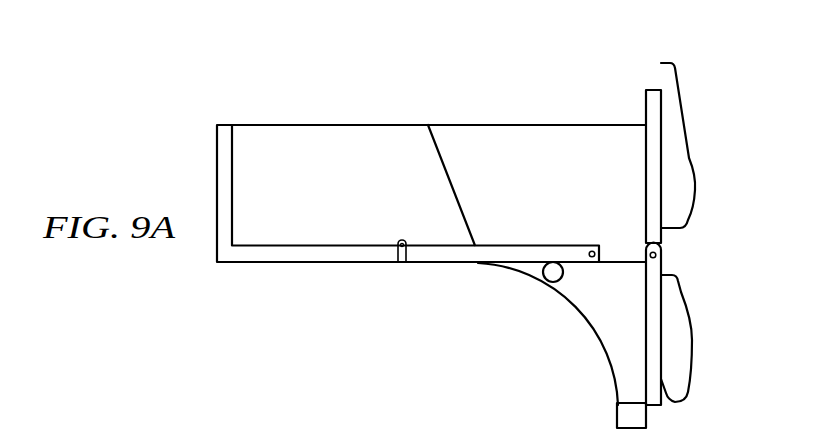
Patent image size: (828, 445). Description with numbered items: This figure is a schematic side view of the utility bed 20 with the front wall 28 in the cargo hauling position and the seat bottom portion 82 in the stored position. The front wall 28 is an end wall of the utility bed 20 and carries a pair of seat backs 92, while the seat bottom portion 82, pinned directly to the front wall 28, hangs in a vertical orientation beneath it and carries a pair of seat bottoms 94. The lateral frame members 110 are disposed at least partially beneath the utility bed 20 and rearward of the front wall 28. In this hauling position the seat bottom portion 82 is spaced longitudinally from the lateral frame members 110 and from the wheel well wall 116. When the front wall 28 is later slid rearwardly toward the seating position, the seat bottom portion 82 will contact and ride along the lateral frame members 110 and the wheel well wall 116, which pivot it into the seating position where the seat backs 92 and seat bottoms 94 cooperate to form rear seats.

The utility bed 20 is at (301, 102).
The front wall 28 is at (644, 175).
The seat bottom portion 82 is at (641, 310).
The seat backs 92 is at (693, 162).
The seat bottoms 94 is at (694, 360).
The lateral frame members 110 is at (543, 270).
The wheel well wall 116 is at (595, 332).